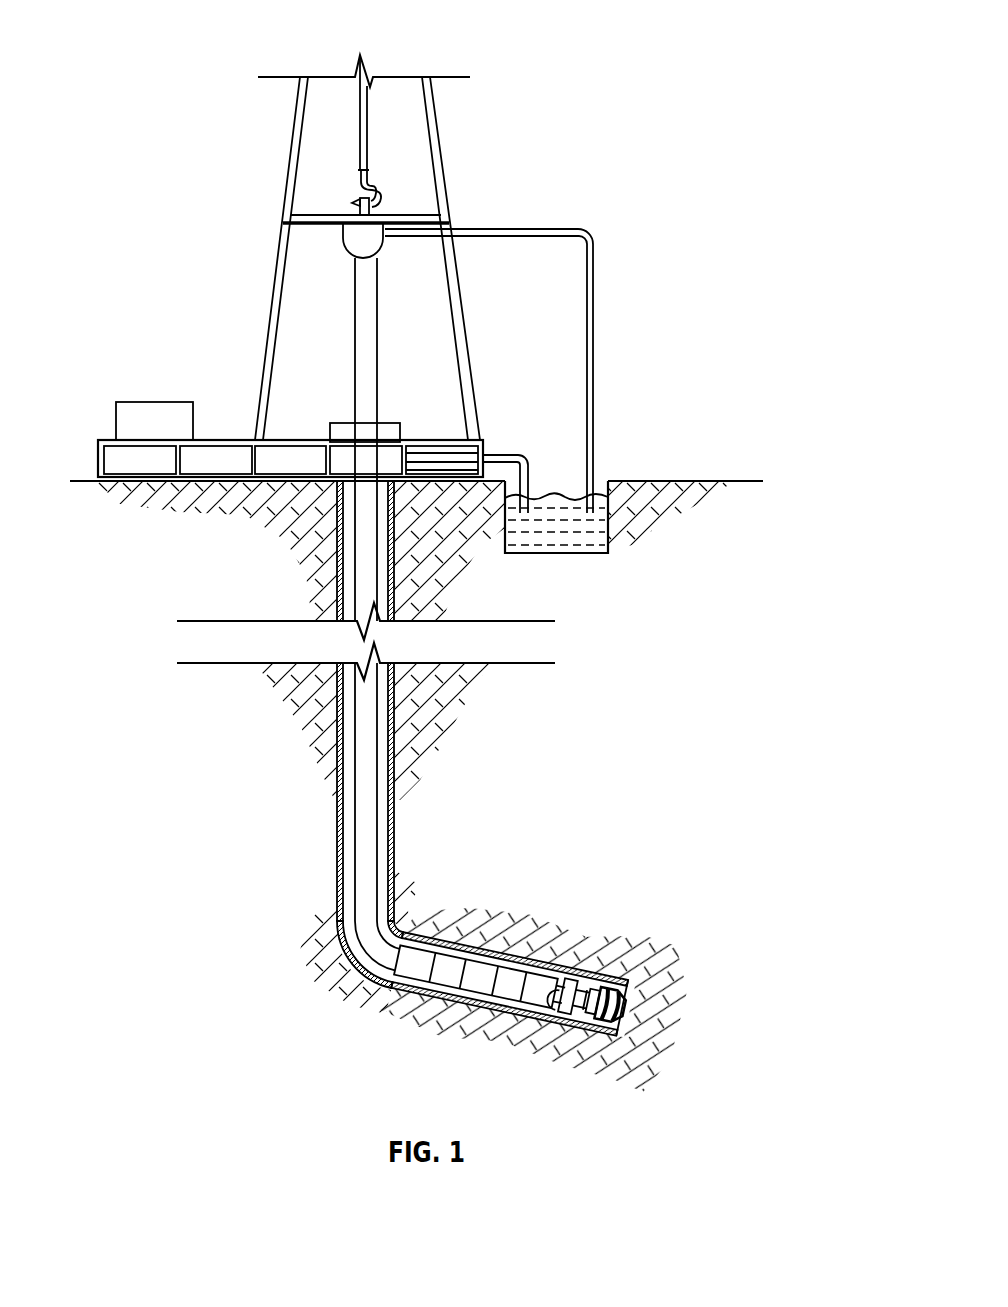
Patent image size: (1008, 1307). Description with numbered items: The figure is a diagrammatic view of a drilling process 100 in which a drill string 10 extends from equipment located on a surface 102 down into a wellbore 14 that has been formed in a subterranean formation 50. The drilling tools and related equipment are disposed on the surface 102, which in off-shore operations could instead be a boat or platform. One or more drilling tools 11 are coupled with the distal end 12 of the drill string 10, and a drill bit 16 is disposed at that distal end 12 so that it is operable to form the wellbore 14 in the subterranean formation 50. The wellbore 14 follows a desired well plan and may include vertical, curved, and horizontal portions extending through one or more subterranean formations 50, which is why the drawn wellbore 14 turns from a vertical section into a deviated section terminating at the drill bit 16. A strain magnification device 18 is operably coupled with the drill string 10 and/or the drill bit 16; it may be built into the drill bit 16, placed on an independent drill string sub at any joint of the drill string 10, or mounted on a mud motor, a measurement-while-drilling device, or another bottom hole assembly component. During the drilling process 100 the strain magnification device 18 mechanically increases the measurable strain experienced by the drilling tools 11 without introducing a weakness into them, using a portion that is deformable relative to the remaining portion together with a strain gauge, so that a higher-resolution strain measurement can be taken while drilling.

The drilling process 100 is at (146, 50).
The strain magnification device 18 is at (170, 433).
The surface 102 is at (707, 441).
The subterranean formation 50 is at (487, 821).
The wellbore 14 is at (354, 596).
The drill string 10 is at (368, 558).
The drilling tools 11 is at (463, 997).
The distal end 12 is at (555, 1006).
The drill bit 16 is at (617, 1017).